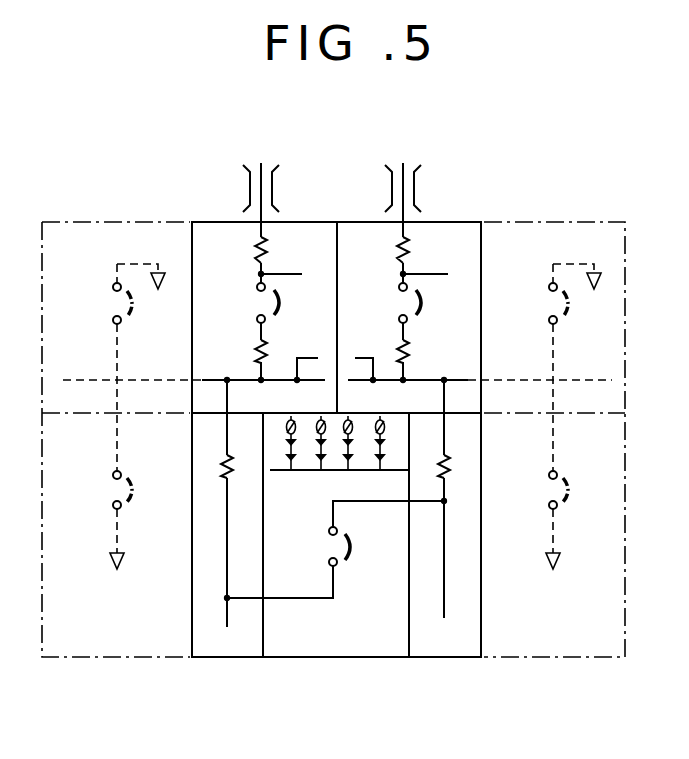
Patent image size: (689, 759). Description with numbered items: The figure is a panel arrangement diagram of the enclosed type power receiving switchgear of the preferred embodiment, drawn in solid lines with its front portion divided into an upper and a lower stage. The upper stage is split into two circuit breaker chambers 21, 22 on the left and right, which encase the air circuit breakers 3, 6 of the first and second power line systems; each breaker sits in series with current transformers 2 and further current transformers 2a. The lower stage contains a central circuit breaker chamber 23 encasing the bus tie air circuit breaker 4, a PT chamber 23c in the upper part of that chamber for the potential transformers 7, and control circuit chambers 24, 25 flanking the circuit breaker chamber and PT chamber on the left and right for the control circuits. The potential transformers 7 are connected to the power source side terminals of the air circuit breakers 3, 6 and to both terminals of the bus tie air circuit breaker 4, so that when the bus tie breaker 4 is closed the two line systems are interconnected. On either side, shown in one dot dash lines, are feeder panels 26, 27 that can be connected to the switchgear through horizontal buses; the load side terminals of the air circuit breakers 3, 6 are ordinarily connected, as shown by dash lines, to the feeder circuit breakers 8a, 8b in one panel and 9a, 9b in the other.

The current transformer 2 is at (275, 249).
The current transformer 2a is at (221, 468).
The air circuit breaker 3 is at (256, 302).
The bus tie air circuit breaker 4 is at (362, 547).
The air circuit breaker 6 is at (400, 302).
The potential transformer 7 is at (392, 450).
The feeder circuit breaker 8a is at (112, 302).
The feeder circuit breaker 8b is at (110, 498).
The feeder circuit breaker 9a is at (549, 302).
The feeder circuit breaker 9b is at (549, 488).
The circuit breaker chamber 21 is at (211, 233).
The circuit breaker chamber 22 is at (455, 233).
The circuit breaker chamber 23 is at (344, 643).
The PT chamber 23c is at (318, 472).
The control circuit chamber 24 is at (232, 643).
The control circuit chamber 25 is at (448, 643).
The feeder panel 26 is at (119, 642).
The feeder panel 27 is at (557, 657).